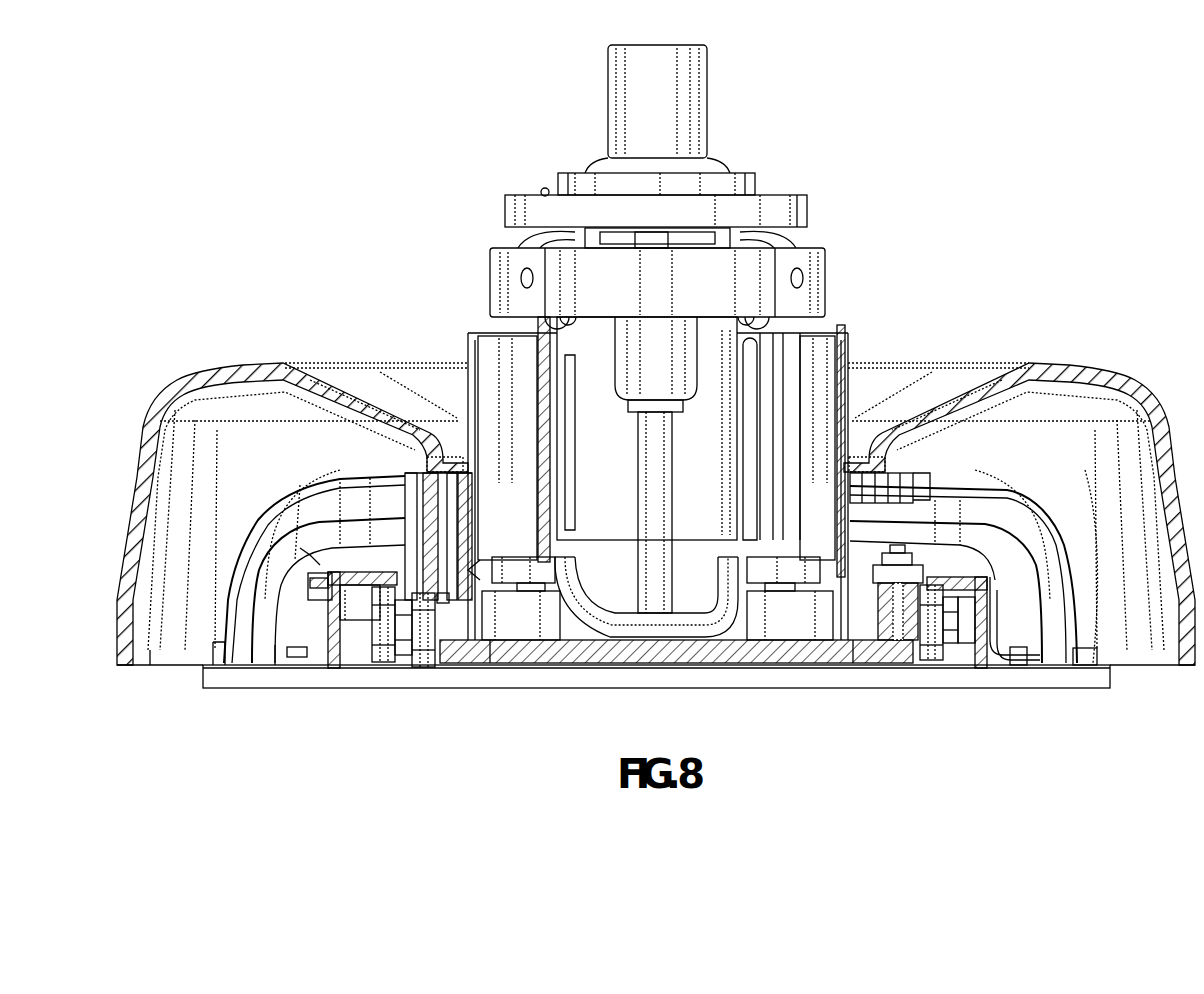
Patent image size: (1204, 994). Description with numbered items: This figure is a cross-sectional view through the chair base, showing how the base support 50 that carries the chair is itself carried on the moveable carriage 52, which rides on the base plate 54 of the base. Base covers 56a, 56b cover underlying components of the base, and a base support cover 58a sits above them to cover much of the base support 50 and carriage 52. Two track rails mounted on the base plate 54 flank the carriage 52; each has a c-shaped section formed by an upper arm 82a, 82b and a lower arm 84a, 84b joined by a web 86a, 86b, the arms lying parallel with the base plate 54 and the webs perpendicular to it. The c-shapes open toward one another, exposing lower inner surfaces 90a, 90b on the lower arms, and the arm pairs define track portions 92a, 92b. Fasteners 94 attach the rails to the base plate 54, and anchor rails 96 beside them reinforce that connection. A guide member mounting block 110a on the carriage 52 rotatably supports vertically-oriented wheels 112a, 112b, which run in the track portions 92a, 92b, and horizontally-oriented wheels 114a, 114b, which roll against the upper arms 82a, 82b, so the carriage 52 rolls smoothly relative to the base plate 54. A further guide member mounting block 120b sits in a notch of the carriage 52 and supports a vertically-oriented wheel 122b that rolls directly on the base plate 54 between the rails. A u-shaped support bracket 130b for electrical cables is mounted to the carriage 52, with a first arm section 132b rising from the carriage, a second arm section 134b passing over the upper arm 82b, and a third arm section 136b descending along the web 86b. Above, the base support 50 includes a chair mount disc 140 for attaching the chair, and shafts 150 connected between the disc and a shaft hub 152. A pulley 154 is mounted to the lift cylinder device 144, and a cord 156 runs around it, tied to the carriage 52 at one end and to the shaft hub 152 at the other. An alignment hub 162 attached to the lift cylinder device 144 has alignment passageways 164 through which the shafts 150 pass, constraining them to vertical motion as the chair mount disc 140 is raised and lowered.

The base support 50 is at (415, 334).
The carriage 52 is at (600, 668).
The base plate 54 is at (740, 690).
The base cover 56a is at (292, 487).
The base cover 56b is at (272, 520).
The base support cover 58a is at (238, 365).
The upper arm 82a is at (990, 580).
The upper arm 82b is at (337, 507).
The lower arm 84a is at (980, 668).
The lower arm 84b is at (335, 668).
The web 86a is at (997, 577).
The web 86b is at (330, 620).
The lower inner surface 90a is at (925, 660).
The lower inner surface 90b is at (390, 655).
The track portion 92a is at (945, 650).
The track portion 92b is at (368, 655).
The fastener 94 is at (1000, 620).
The anchor rail 96 is at (308, 663).
The guide member mounting block 110a is at (895, 642).
The vertically-oriented wheel 112a is at (930, 573).
The vertically-oriented wheel 112b is at (387, 500).
The horizontally-oriented wheel 114a is at (930, 587).
The horizontally-oriented wheel 114b is at (440, 575).
The guide member mounting block 120b is at (470, 665).
The vertically-oriented wheel 122b is at (425, 662).
The support bracket 130b is at (296, 579).
The first arm section 132b is at (448, 585).
The second arm section 134b is at (298, 549).
The third arm section 136b is at (308, 590).
The chair mount disc 140 is at (530, 197).
The lift cylinder device 144 is at (688, 560).
The shaft 150 is at (645, 440).
The shaft hub 152 is at (593, 580).
The pulley 154 is at (535, 243).
The cord 156 is at (740, 445).
The alignment hub 162 is at (826, 280).
The alignment passageway 164 is at (645, 250).